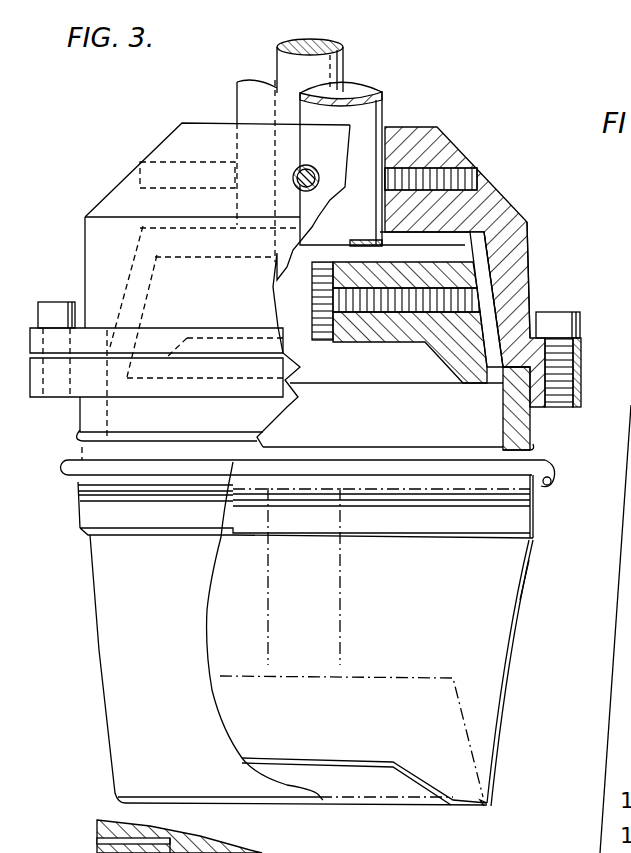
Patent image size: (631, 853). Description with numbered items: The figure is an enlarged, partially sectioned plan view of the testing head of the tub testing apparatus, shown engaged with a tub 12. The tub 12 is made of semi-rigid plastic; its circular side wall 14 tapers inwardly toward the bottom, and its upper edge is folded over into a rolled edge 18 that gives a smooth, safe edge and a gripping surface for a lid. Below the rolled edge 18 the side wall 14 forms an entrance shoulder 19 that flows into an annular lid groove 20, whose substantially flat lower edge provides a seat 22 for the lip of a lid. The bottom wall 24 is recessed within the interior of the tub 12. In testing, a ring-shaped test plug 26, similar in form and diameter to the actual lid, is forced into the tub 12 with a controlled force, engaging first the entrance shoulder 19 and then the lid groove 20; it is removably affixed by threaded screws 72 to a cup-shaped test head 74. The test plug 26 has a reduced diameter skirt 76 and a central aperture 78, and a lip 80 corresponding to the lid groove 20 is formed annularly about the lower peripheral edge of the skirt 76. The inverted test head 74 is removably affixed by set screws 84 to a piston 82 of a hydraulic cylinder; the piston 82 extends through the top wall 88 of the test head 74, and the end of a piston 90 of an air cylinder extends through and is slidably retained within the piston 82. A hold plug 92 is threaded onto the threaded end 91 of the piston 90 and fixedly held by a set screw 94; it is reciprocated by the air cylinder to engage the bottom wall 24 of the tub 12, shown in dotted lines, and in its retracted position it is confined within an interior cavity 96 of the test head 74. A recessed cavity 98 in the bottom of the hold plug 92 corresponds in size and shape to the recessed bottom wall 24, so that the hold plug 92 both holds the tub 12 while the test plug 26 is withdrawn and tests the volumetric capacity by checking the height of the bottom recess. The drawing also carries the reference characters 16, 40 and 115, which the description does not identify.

The tub 12 is at (516, 658).
The side wall 14 is at (513, 608).
The shoulder 16 is at (533, 538).
The rolled edge 18 is at (556, 477).
The entrance shoulder 19 is at (515, 506).
The lid groove 20 is at (537, 497).
The seat 22 is at (533, 510).
The bottom wall 24 is at (368, 765).
The test plug 26 is at (600, 357).
The housing 40 is at (591, 752).
The threaded screws 72 is at (565, 318).
The test head 74 is at (540, 294).
The skirt 76 is at (533, 410).
The central aperture 78 is at (503, 432).
The lip 80 is at (533, 444).
The piston 82 is at (382, 110).
The set screws 84 is at (158, 140).
The top wall 88 is at (430, 127).
The piston 90 is at (338, 58).
The threaded end 91 is at (370, 262).
The hold plug 92 is at (478, 282).
The set screw 94 is at (405, 265).
The interior cavity 96 is at (480, 296).
The recessed cavity 98 is at (378, 383).
The element 115 is at (630, 208).